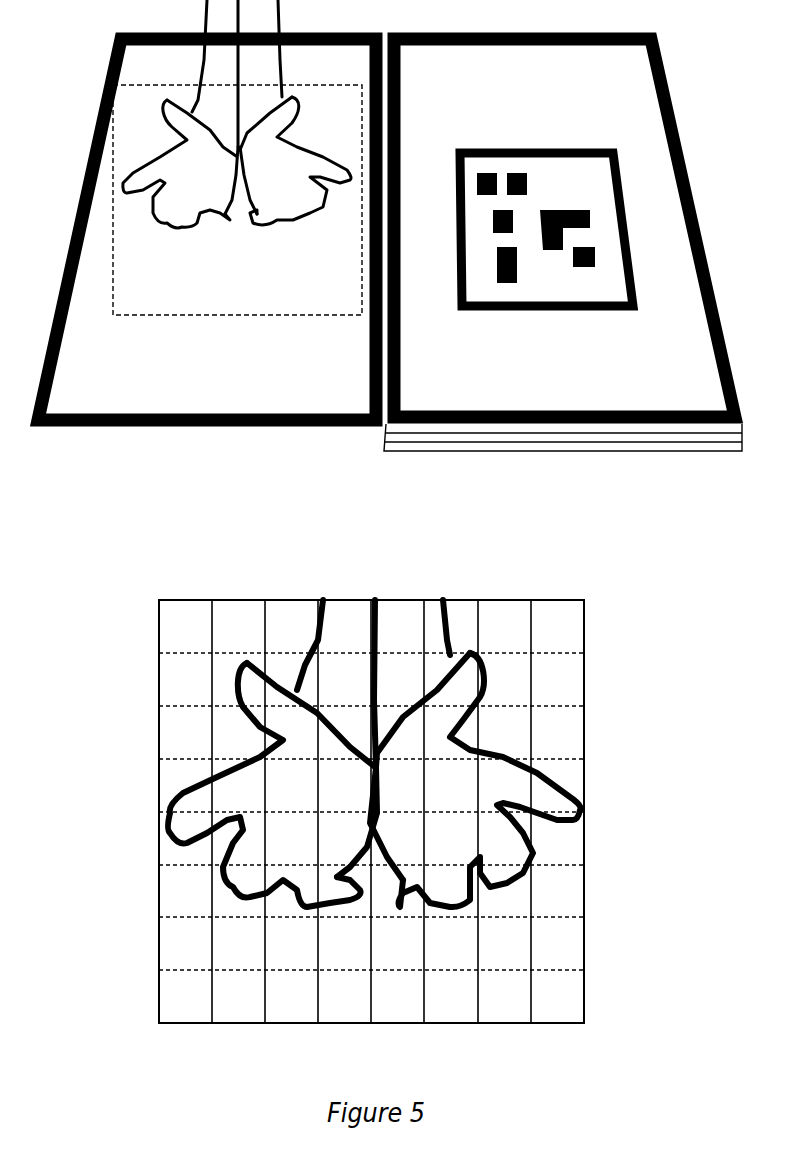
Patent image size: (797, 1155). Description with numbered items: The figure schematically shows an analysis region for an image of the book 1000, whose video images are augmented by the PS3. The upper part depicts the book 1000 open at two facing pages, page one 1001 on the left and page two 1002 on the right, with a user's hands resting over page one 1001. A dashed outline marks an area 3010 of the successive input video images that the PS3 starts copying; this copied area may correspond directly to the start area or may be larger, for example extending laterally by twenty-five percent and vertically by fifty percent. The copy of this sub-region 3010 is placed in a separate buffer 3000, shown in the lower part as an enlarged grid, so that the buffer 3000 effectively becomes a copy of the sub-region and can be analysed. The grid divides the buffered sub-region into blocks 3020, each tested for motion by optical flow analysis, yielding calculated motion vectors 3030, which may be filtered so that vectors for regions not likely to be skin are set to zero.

The book 1000 is at (132, 315).
The page 1 of the book 1001 is at (207, 210).
The page 2 of the book 1002 is at (563, 245).
The copied area 3010 is at (263, 323).
The buffer 3000 is at (548, 583).
The blocks 3020 is at (557, 637).
The motion vectors 3030 is at (476, 781).